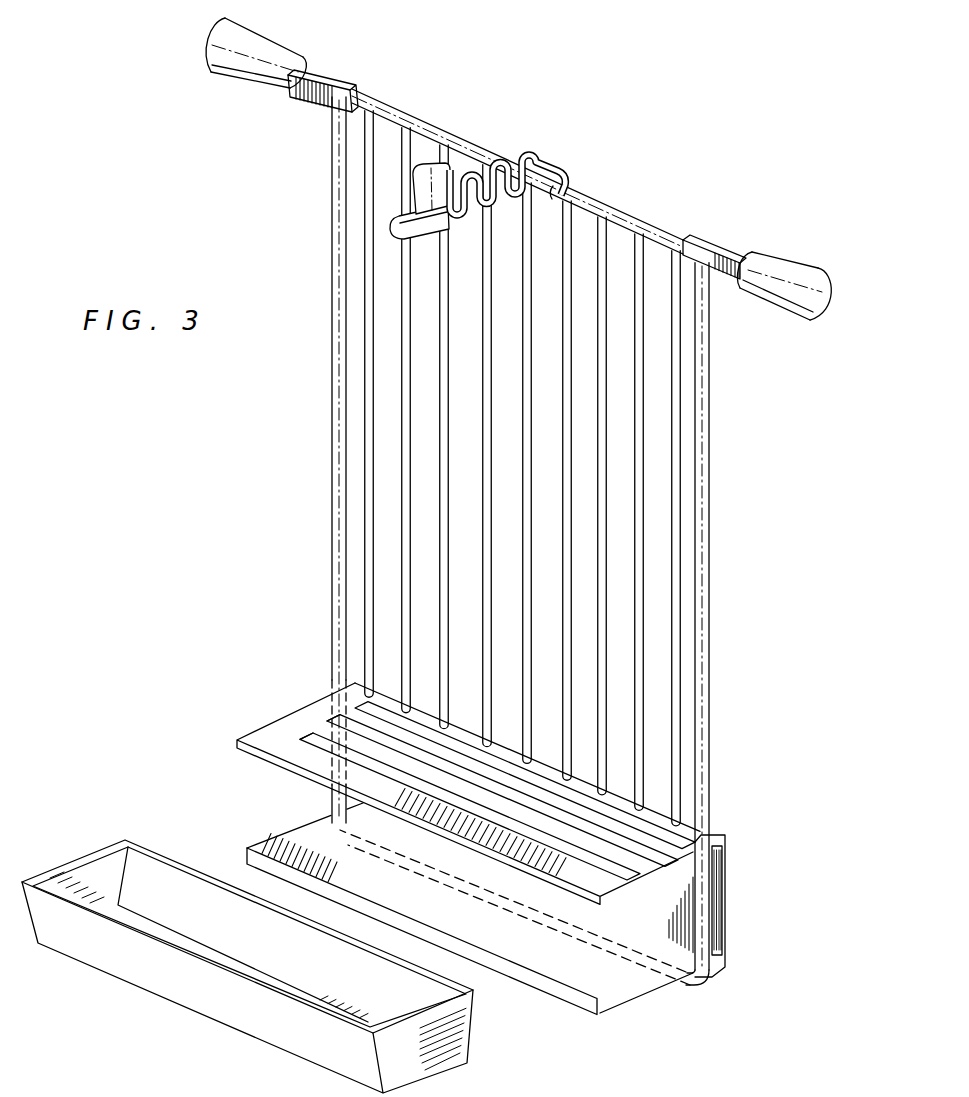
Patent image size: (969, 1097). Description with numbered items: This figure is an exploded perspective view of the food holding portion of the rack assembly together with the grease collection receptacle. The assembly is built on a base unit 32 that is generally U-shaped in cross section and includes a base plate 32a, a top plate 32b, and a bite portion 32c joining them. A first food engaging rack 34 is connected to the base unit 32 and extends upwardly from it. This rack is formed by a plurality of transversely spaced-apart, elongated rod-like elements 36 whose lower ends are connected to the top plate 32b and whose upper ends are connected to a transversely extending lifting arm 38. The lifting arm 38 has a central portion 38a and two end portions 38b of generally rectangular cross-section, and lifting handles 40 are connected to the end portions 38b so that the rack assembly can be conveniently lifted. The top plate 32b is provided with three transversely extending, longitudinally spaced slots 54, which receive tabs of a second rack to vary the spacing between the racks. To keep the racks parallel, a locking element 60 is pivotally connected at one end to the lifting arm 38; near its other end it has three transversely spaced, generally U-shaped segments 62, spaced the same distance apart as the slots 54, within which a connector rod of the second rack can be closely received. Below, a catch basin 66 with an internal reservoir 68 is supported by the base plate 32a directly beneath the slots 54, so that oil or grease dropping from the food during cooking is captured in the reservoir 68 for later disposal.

The base unit 32 is at (492, 864).
The base plate 32a is at (633, 1002).
The top plate 32b is at (253, 738).
The bite portion 32c is at (727, 888).
The first food engaging rack 34 is at (711, 569).
The rod-like elements 36 is at (680, 467).
The lifting arm 38 is at (616, 207).
The central portion 38a is at (572, 190).
The end portions 38b is at (333, 78).
The lifting handles 40 is at (262, 37).
The slots 54 is at (330, 718).
The locking element 60 is at (490, 161).
The U-shaped segments 62 is at (497, 150).
The catch basin 66 is at (247, 952).
The internal reservoir 68 is at (165, 907).